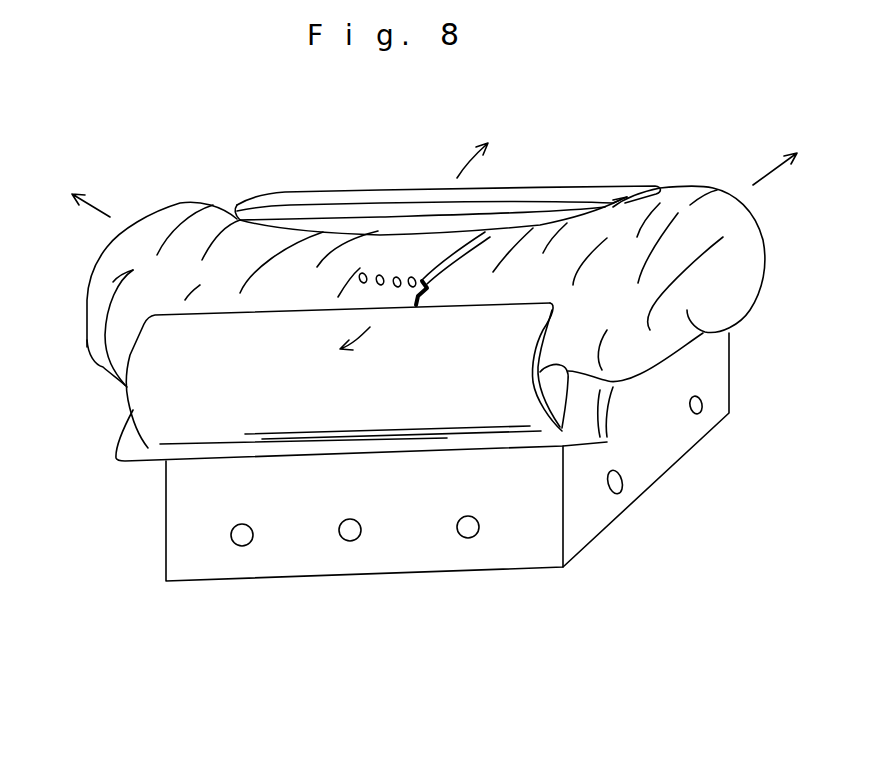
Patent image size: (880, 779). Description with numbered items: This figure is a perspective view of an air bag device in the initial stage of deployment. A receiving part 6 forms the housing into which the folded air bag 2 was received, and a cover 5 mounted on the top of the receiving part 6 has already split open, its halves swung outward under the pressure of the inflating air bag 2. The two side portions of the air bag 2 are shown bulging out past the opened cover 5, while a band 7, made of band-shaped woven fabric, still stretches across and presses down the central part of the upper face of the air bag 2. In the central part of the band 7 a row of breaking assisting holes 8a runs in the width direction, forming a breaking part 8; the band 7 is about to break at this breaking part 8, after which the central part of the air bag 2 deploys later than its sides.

The air bag 2 is at (732, 292).
The cover 5 is at (160, 398).
The receiving part 6 is at (203, 557).
The band 7 is at (405, 248).
The breaking part 8 is at (374, 272).
The breaking assisting holes 8a is at (423, 275).